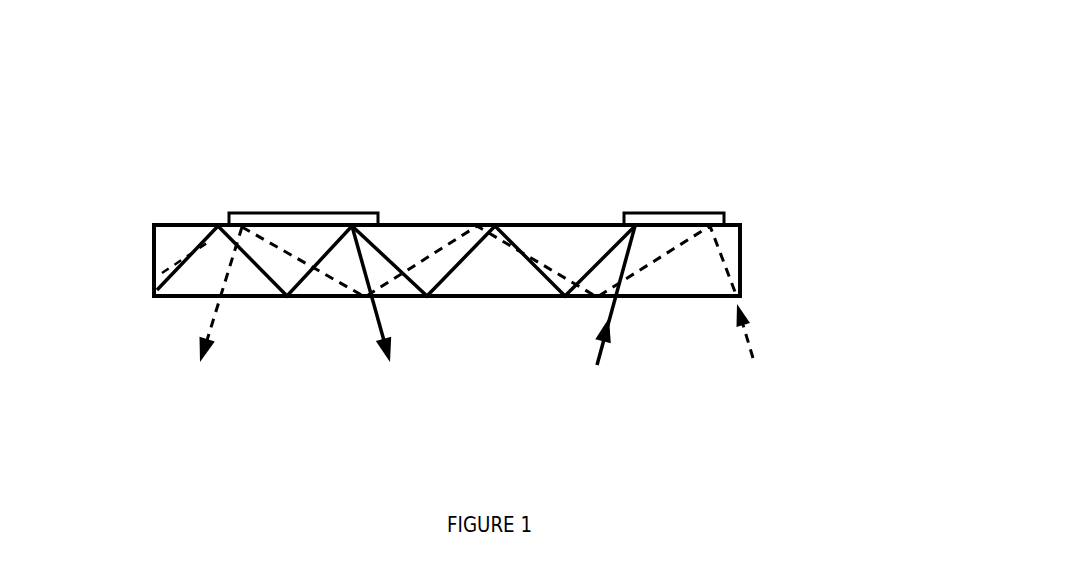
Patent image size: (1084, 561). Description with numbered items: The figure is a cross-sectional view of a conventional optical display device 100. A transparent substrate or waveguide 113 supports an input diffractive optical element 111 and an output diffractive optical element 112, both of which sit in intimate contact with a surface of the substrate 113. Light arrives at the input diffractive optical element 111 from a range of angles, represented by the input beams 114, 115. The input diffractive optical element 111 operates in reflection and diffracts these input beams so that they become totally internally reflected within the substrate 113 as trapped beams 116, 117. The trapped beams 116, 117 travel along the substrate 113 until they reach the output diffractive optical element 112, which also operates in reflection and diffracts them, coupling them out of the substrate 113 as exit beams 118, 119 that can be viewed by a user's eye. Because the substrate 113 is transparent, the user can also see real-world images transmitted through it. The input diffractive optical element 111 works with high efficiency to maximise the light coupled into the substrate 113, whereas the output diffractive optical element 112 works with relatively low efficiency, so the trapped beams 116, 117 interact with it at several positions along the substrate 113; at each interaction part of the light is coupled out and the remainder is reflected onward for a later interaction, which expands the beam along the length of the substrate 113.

The optical display device 100 is at (797, 224).
The input diffractive optical element 111 is at (681, 210).
The output diffractive optical element 112 is at (325, 210).
The substrate 113 is at (166, 220).
The input beam 114 is at (759, 346).
The input beam 115 is at (615, 309).
The trapped beam 116 is at (477, 252).
The trapped beam 117 is at (420, 263).
The exit beam 118 is at (386, 309).
The exit beam 119 is at (220, 305).